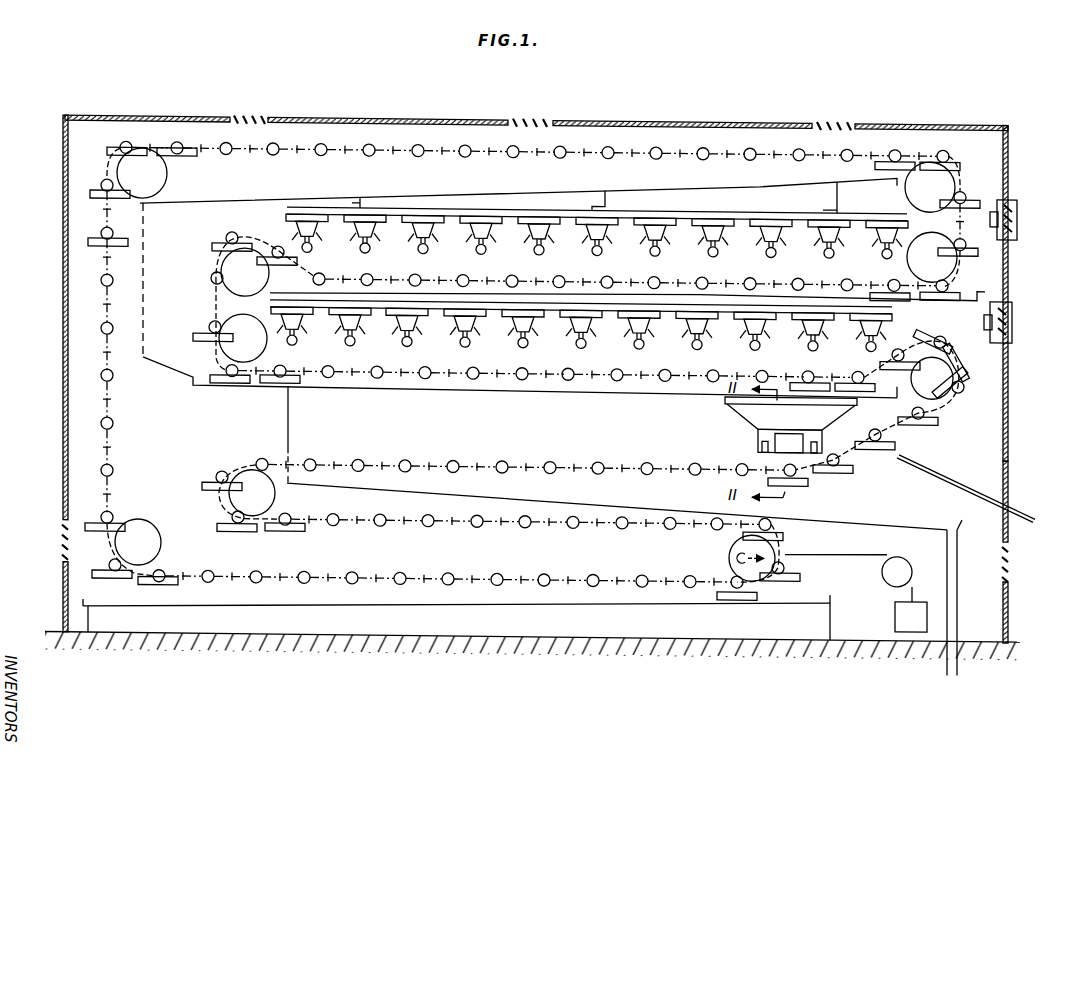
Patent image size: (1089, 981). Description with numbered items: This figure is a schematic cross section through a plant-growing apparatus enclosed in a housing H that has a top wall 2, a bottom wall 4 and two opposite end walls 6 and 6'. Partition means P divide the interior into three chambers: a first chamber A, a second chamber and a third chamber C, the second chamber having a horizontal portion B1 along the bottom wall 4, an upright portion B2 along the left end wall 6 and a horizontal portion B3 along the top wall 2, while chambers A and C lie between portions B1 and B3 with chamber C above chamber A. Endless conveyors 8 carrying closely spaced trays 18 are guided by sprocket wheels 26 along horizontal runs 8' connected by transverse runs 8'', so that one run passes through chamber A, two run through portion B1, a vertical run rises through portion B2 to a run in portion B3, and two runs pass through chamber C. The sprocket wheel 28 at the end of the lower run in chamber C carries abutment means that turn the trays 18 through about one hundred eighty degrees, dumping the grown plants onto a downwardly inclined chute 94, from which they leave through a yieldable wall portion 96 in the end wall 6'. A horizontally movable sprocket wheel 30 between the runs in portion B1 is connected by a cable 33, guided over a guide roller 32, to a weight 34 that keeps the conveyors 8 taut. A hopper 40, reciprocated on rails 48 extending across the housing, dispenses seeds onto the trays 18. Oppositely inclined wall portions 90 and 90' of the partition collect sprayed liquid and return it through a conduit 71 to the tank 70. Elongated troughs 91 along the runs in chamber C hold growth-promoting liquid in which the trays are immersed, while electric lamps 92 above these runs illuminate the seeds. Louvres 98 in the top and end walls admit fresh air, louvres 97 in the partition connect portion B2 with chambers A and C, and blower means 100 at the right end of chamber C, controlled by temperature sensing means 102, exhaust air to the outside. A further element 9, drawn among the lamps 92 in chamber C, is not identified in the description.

The top wall 2 is at (419, 114).
The bottom wall 4 is at (460, 634).
The end wall 6 is at (45, 373).
The end wall 6' is at (1025, 294).
The endless conveyor 8 is at (534, 168).
The horizontal run 8' is at (550, 371).
The transverse run 8'' is at (533, 366).
The rail 9 is at (795, 246).
The tray 18 is at (194, 156).
The sprocket wheel 26 is at (156, 185).
The sprocket wheel 28 is at (930, 391).
The sprocket wheel 30 is at (784, 537).
The guide roller 32 is at (910, 553).
The cable 33 is at (853, 547).
The weight 34 is at (895, 603).
The hopper 40 is at (824, 414).
The rail 48 is at (762, 444).
The tank 70 is at (93, 619).
The conduit 71 is at (958, 614).
The inclined wall portion 90 is at (617, 505).
The inclined wall portion 90' is at (456, 613).
The trough 91 is at (622, 287).
The electric lamp 92 is at (708, 249).
The chute 94 is at (962, 476).
The yieldable wall portion 96 is at (1008, 472).
The louvres 97 is at (146, 290).
The louver 98 is at (262, 109).
The blower means 100 is at (1018, 209).
The temperature sensing means 102 is at (785, 247).
The housing H is at (681, 97).
The first chamber A is at (533, 433).
The first portion of second chamber B1 is at (535, 564).
The second portion of second chamber B2 is at (152, 394).
The third portion of second chamber B3 is at (548, 186).
The third chamber C is at (540, 266).
The partition means P is at (205, 386).